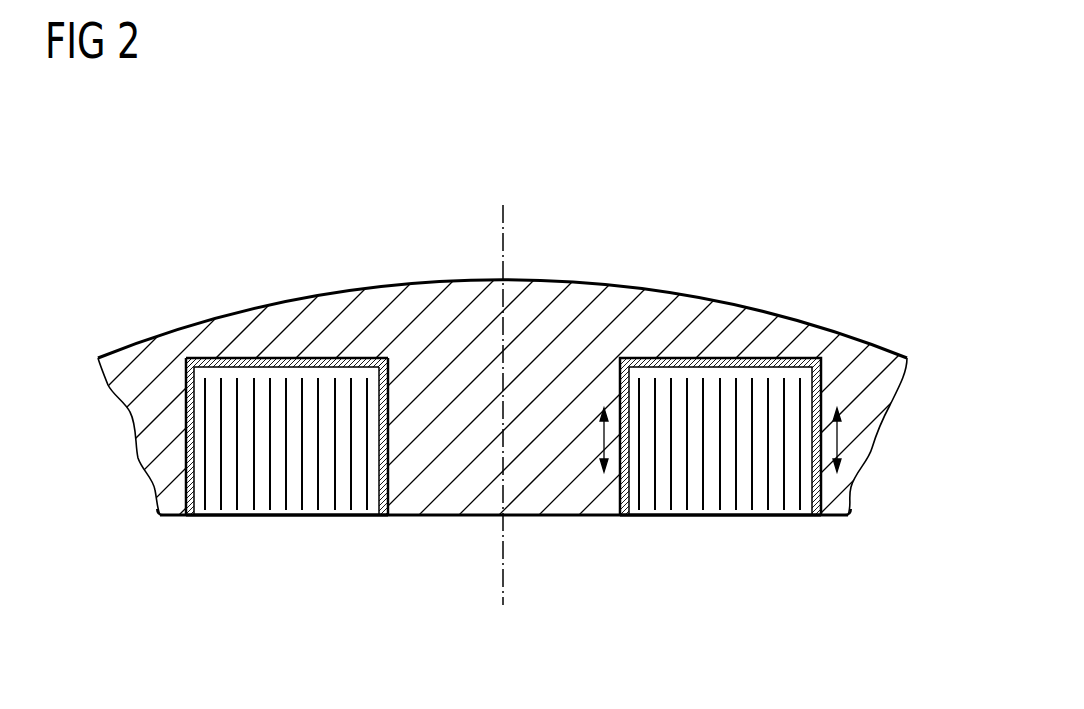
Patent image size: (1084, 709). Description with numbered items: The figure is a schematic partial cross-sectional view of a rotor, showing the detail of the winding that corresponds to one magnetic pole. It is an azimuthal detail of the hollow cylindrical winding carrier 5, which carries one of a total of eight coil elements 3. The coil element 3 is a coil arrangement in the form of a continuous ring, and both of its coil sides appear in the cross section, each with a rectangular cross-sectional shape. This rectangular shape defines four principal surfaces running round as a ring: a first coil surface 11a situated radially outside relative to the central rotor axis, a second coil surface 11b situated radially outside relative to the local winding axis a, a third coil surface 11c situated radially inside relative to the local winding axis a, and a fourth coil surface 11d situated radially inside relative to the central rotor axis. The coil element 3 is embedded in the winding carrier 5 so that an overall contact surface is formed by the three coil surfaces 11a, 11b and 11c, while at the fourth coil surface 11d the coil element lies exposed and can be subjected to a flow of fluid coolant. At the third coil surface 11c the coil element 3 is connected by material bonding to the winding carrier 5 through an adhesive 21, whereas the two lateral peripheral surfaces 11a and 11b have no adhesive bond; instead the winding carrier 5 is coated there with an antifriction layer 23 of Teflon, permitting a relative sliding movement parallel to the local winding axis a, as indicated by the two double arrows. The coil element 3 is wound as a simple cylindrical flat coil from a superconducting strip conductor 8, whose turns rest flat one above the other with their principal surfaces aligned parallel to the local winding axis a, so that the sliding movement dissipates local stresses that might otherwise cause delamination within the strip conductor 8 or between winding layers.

The coil element 3 is at (340, 515).
The winding carrier 5 is at (615, 300).
The superconducting strip conductor 8 is at (803, 405).
The first coil surface 11a is at (368, 463).
The second coil surface 11b is at (186, 425).
The third coil surface 11c is at (280, 362).
The fourth coil surface 11d is at (280, 515).
The adhesive 21 is at (727, 358).
The antifriction layer 23 is at (822, 515).
The local winding axis a is at (503, 228).